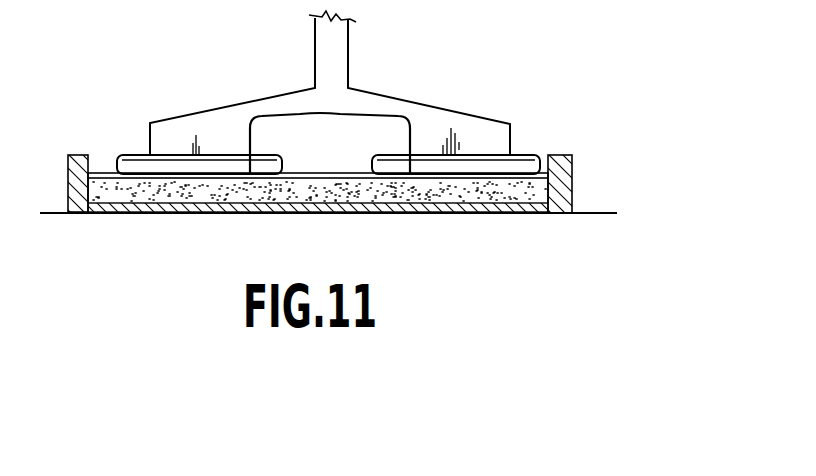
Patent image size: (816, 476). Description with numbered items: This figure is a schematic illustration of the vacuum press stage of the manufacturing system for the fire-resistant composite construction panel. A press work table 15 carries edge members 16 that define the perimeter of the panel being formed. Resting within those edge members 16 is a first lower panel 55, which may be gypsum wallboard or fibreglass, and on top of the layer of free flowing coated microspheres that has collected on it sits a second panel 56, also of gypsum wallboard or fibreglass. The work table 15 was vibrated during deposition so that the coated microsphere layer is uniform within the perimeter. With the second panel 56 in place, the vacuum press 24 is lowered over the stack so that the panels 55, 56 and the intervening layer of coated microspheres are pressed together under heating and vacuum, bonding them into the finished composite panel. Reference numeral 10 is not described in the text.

The substrate 10 is at (150, 192).
The press work table 15 is at (603, 213).
The edge members 16 is at (572, 183).
The vacuum press 24 is at (465, 127).
The first lower panel 55 is at (480, 207).
The second panel 56 is at (105, 158).